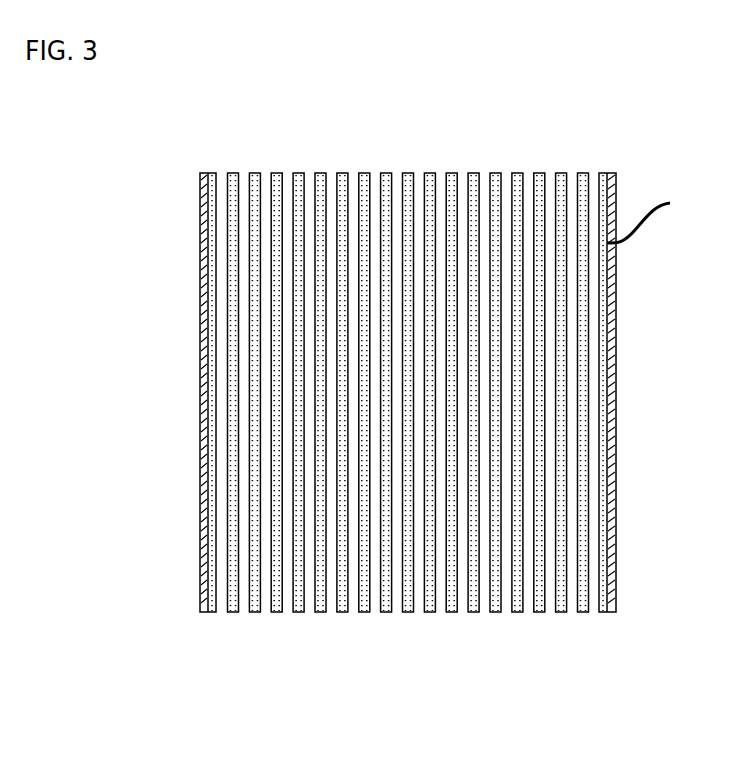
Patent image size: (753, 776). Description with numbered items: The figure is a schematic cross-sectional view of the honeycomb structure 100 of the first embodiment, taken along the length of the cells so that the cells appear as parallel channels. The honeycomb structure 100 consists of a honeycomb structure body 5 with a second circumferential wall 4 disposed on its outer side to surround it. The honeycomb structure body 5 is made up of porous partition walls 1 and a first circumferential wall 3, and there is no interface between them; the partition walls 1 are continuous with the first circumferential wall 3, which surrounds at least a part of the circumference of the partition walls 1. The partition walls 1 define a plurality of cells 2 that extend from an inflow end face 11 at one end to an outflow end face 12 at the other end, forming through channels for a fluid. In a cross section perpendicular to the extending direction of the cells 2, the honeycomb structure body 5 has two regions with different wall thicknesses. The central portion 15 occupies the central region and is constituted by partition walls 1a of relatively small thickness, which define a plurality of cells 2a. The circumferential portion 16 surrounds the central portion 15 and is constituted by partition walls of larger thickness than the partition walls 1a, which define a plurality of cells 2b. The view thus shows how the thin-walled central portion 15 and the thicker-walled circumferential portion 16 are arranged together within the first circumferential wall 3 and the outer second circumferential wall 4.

The honeycomb structure 100 is at (668, 98).
The partition walls 1 is at (333, 350).
The partition walls of the central portion 1a is at (233, 177).
The cells 2 is at (366, 365).
The cells of the central portion 2a is at (419, 392).
The cells of the circumferential portion 2b is at (266, 392).
The first circumferential wall 3 is at (645, 216).
The second circumferential wall 4 is at (621, 383).
The honeycomb structure body 5 is at (543, 161).
The inflow end face 11 is at (203, 139).
The outflow end face 12 is at (226, 630).
The central portion 15 is at (371, 418).
The circumferential portion 16 is at (241, 510).